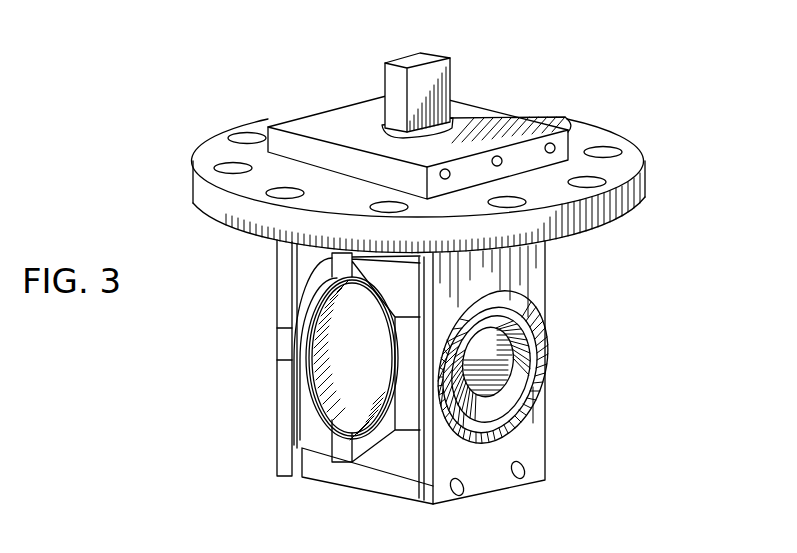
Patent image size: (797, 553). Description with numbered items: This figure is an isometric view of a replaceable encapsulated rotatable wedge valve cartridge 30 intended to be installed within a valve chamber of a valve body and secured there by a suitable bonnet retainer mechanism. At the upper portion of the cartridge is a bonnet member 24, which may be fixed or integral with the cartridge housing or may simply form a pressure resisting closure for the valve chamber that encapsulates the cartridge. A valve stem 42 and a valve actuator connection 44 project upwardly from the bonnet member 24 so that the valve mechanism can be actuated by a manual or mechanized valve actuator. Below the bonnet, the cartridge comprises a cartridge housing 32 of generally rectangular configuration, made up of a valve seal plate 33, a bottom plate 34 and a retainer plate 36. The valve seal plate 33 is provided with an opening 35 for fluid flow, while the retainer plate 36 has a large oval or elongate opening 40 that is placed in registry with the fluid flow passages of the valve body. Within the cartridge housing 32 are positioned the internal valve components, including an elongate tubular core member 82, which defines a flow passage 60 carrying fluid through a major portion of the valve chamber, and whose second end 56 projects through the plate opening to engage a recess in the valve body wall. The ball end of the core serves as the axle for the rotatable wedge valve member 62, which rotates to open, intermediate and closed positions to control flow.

The bonnet member 24 is at (608, 128).
The rotatable wedge valve cartridge 30 is at (712, 260).
The cartridge housing 32 is at (420, 384).
The valve seal plate 33 is at (283, 445).
The bottom plate 34 is at (367, 480).
The opening 35 is at (280, 340).
The retainer plate 36 is at (530, 272).
The elongate opening 40 is at (503, 303).
The valve stem 42 is at (483, 108).
The valve actuator connection 44 is at (405, 54).
The second end 56 is at (507, 398).
The flow passage 60 is at (488, 358).
The rotatable wedge valve member 62 is at (320, 358).
The elongate tubular core member 82 is at (376, 110).